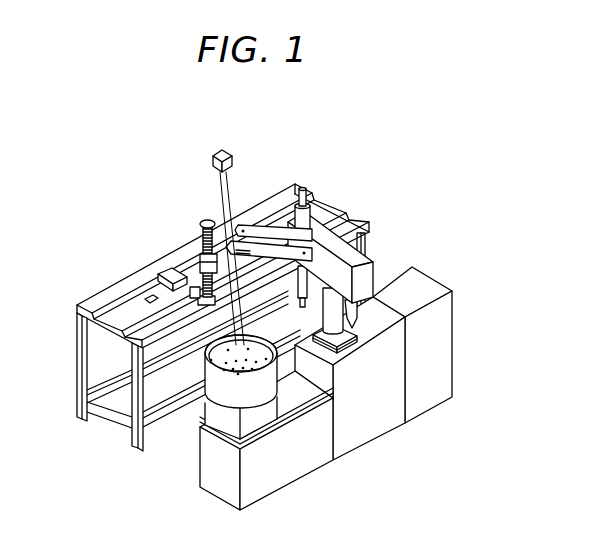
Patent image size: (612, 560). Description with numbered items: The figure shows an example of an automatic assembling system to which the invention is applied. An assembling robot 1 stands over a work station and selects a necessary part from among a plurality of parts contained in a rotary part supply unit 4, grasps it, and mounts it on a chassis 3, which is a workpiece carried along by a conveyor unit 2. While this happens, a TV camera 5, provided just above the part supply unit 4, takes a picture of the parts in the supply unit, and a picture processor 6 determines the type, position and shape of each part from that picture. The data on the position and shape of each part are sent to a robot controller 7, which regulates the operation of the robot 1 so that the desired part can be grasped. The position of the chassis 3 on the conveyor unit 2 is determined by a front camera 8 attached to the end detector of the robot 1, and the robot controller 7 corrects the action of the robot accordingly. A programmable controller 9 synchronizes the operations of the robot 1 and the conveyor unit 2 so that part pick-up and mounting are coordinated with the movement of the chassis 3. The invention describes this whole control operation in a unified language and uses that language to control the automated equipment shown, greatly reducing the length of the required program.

The assembling robot 1 is at (368, 273).
The conveyor unit 2 is at (75, 312).
The chassis 3 is at (168, 276).
The rotary part supply unit 4 is at (220, 393).
The TV camera 5 is at (225, 151).
The picture processor 6 is at (438, 370).
The robot controller 7 is at (382, 425).
The front camera 8 is at (198, 257).
The programmable controller 9 is at (287, 472).